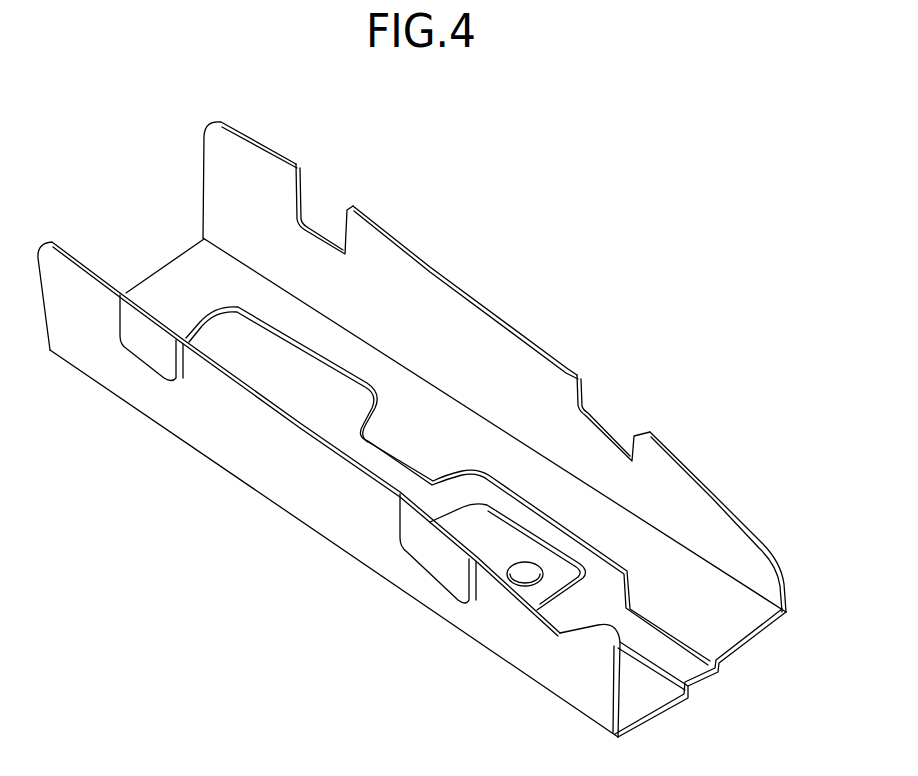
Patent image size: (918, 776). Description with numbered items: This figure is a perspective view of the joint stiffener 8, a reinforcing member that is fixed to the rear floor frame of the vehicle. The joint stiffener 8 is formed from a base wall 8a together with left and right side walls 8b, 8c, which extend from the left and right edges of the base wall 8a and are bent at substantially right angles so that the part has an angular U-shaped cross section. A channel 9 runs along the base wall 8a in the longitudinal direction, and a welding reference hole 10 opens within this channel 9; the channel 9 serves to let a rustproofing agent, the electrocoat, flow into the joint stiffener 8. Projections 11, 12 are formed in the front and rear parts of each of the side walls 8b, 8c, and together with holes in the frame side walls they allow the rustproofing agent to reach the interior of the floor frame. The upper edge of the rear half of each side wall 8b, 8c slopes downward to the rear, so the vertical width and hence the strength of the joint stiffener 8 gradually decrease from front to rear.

The joint stiffener 8 is at (323, 543).
The base wall 8a is at (172, 278).
The left side wall 8b is at (250, 470).
The right side wall 8c is at (473, 338).
The channel 9 is at (703, 660).
The welding reference hole 10 is at (525, 583).
The projection 11 is at (323, 207).
The projection 12 is at (622, 423).